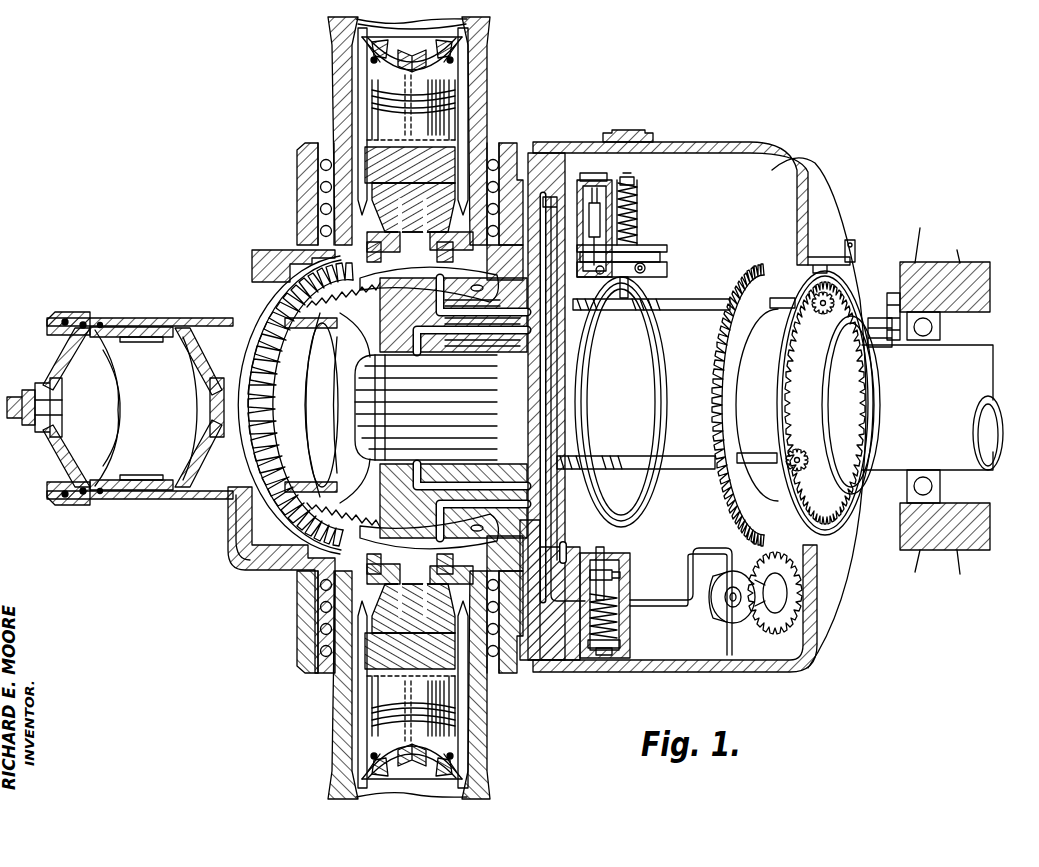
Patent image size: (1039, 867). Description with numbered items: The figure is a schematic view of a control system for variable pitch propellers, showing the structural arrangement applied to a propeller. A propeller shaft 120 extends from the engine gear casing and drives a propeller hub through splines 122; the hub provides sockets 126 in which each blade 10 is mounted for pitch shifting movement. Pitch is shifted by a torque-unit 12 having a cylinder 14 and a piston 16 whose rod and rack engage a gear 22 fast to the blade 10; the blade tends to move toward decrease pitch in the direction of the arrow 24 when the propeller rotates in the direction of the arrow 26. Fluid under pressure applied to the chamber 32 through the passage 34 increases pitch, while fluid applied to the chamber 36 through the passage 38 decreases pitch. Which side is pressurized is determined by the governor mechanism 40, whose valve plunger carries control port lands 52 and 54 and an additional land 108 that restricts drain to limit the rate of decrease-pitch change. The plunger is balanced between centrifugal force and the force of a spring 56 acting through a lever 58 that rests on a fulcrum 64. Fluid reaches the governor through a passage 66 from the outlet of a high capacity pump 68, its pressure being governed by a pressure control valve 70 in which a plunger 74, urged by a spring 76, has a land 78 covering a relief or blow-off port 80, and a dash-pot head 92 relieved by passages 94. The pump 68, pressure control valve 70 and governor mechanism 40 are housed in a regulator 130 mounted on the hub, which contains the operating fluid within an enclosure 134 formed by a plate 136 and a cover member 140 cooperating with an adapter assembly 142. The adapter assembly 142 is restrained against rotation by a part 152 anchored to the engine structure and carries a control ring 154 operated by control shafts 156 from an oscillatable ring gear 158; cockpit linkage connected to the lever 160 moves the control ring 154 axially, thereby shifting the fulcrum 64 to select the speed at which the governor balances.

The blade 10 is at (478, 60).
The torque-unit 12 is at (318, 131).
The cylinder 14 is at (462, 140).
The piston 16 is at (455, 130).
The gear 22 is at (305, 570).
The arrow 24 is at (330, 62).
The arrow 26 is at (246, 270).
The chamber 32 is at (378, 74).
The passage 34 is at (473, 308).
The chamber 36 is at (355, 205).
The passage 38 is at (463, 318).
The governor mechanism 40 is at (639, 226).
The control port land 52 is at (637, 183).
The control port land 54 is at (638, 221).
The spring 56 is at (638, 205).
The lever 58 is at (638, 244).
The fulcrum 64 is at (650, 258).
The passage 66 is at (558, 418).
The high capacity pump 68 is at (720, 607).
The pressure control valve 70 is at (622, 625).
The plunger 74 is at (610, 606).
The spring 76 is at (620, 645).
The land 78 is at (610, 566).
The relief or blow-off port 80 is at (614, 578).
The dash-pot head 92 is at (612, 655).
The passages 94 is at (618, 657).
The additional land 108 is at (610, 184).
The propeller shaft 120 is at (693, 446).
The splines 122 is at (477, 428).
The sockets 126 is at (540, 150).
The regulator 130 is at (808, 200).
The enclosure 134 is at (800, 175).
The plate 136 is at (572, 672).
The cover member 140 is at (735, 142).
The adapter assembly 142 is at (818, 414).
The part 152 is at (882, 348).
The control ring 154 is at (635, 522).
The control shafts 156 is at (693, 310).
The ring gear 158 is at (782, 368).
The lever 160 is at (856, 251).